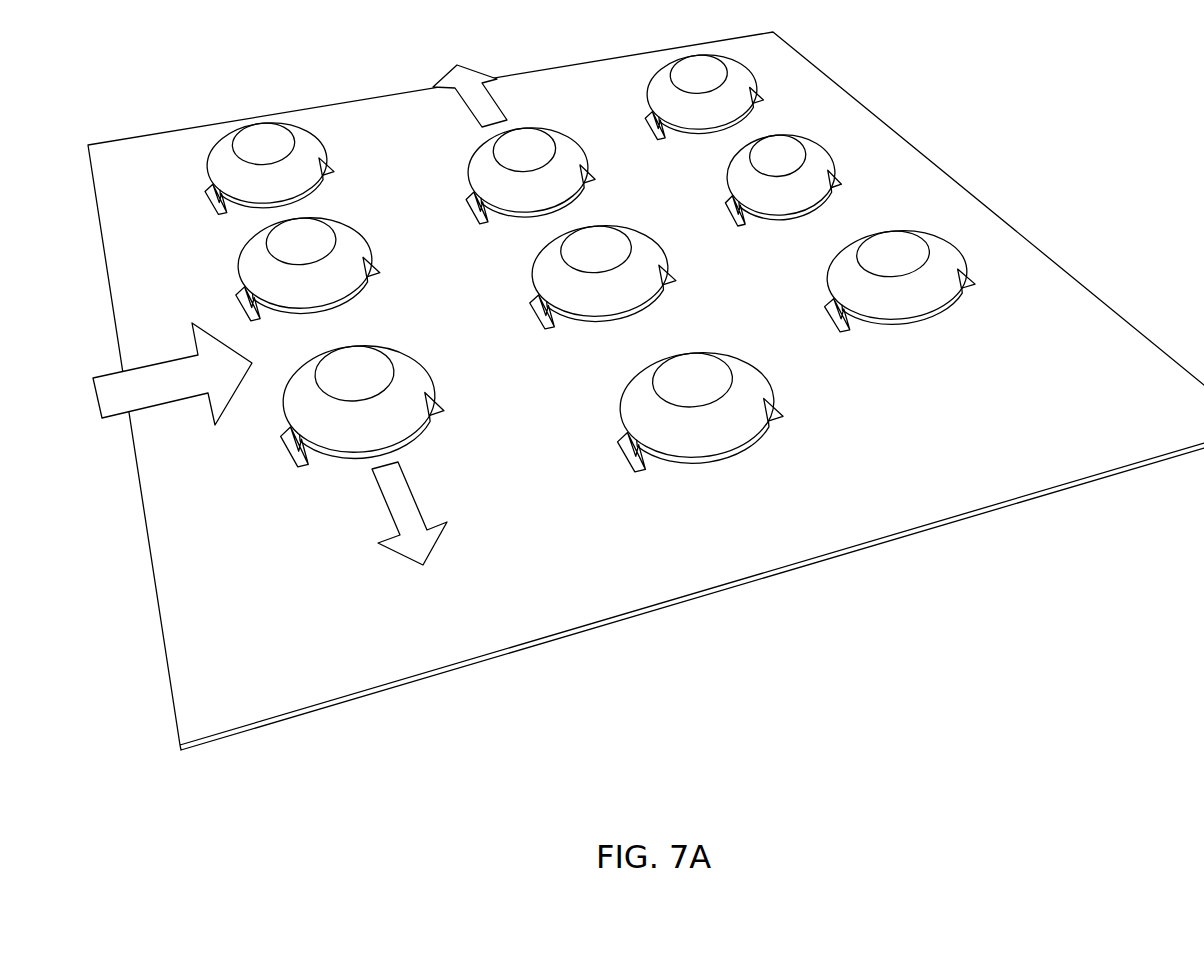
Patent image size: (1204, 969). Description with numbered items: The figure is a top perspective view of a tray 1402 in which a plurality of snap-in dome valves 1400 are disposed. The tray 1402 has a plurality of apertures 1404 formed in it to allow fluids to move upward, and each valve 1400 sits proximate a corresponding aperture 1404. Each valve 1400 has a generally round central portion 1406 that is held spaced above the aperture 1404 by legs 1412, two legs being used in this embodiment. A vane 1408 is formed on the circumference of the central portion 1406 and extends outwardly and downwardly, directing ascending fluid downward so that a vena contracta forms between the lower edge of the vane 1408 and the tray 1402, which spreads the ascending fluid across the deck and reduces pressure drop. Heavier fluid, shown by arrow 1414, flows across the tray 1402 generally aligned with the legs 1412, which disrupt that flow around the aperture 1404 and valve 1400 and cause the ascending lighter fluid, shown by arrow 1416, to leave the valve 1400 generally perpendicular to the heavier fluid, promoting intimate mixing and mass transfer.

The snap-in dome valve 1400 is at (747, 427).
The tray 1402 is at (215, 690).
The aperture 1404 is at (690, 468).
The central portion 1406 is at (748, 367).
The vane 1408 is at (742, 442).
The leg 1412 is at (612, 443).
The arrow illustrating heavier fluid 1414 is at (153, 396).
The arrow illustrating lighter fluid 1416 is at (408, 512).